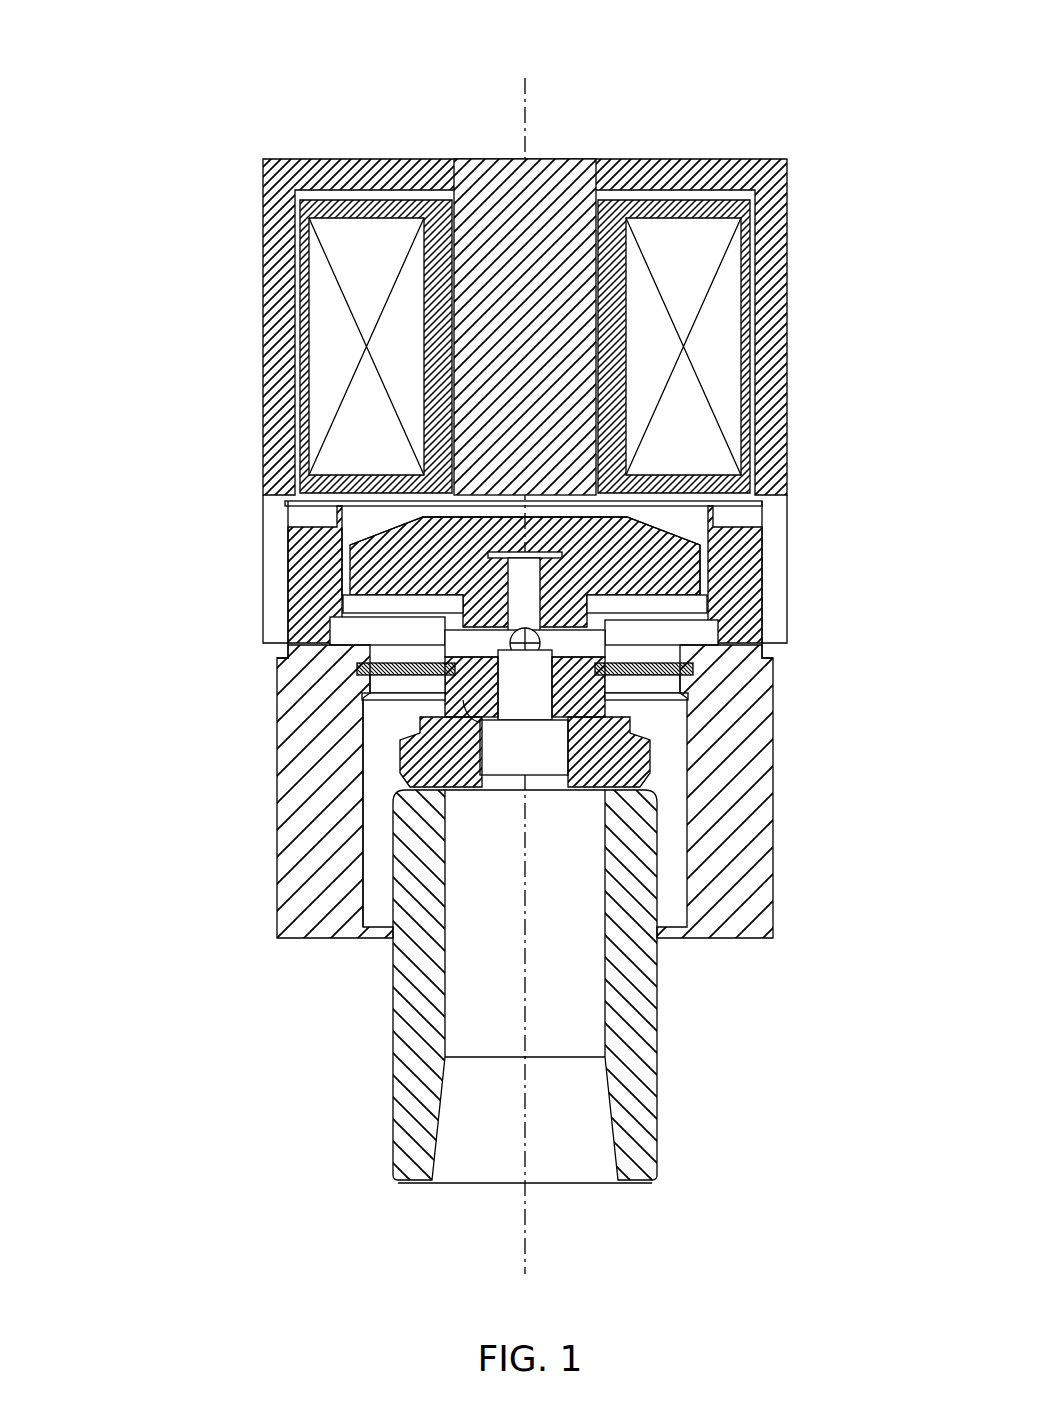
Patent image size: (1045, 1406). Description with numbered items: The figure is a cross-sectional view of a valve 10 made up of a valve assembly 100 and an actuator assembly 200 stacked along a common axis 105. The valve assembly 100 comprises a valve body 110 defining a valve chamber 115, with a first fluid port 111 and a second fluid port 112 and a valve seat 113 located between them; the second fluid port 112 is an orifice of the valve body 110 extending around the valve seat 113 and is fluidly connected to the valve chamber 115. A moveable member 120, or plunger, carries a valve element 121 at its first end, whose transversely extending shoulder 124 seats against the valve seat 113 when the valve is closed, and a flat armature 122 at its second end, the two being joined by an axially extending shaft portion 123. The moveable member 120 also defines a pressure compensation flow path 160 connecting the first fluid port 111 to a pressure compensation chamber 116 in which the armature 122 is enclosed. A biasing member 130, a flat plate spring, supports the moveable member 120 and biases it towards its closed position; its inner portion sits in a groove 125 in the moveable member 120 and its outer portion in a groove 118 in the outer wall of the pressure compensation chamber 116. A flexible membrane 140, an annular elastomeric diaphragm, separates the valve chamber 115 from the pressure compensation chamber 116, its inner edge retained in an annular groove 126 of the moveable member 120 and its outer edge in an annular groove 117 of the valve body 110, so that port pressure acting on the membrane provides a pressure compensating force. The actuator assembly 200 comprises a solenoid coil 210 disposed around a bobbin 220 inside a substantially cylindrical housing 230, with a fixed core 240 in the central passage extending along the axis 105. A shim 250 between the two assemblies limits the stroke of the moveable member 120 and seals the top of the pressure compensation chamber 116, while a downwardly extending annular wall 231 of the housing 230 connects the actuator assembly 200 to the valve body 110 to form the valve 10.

The valve 10 is at (802, 45).
The valve assembly 100 is at (432, 576).
The axis 105 is at (531, 118).
The valve body 110 is at (762, 730).
The first fluid port 111 is at (526, 1025).
The second fluid port 112 is at (379, 917).
The valve seat 113 is at (638, 884).
The valve chamber 115 is at (362, 862).
The pressure compensation chamber 116 is at (360, 522).
The annular groove 117 is at (607, 687).
The groove 118 is at (640, 607).
The moveable member 120 is at (683, 525).
The valve element 121 is at (400, 733).
The armature 122 is at (383, 560).
The shaft portion 123 is at (640, 735).
The transversely extending shoulder 124 is at (640, 767).
The groove 125 is at (583, 590).
The annular groove 126 is at (463, 668).
The biasing member 130 is at (357, 623).
The flexible membrane 140 is at (700, 670).
The pressure compensation flow path 160 is at (543, 800).
The actuator assembly 200 is at (483, 286).
The solenoid coil 210 is at (400, 377).
The bobbin 220 is at (437, 240).
The housing 230 is at (777, 314).
The annular wall 231 is at (270, 572).
The fixed core 240 is at (563, 413).
The shim 250 is at (713, 480).